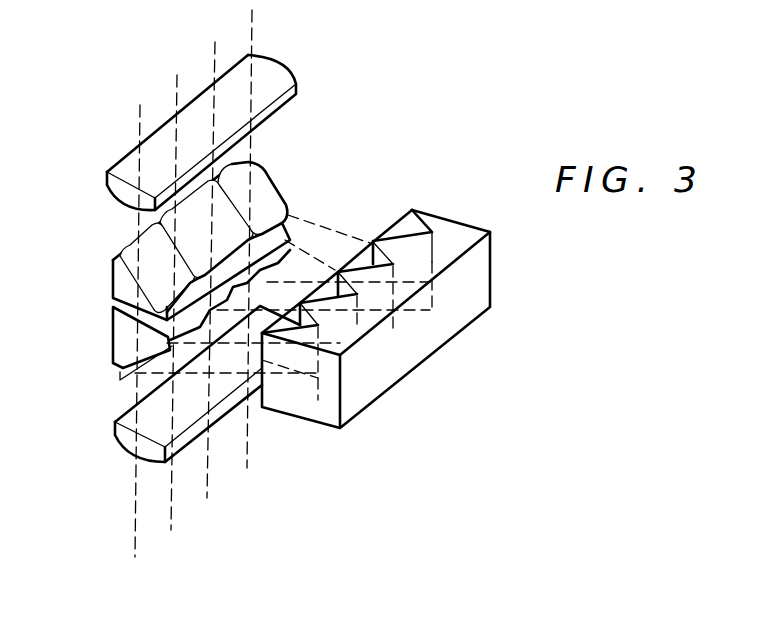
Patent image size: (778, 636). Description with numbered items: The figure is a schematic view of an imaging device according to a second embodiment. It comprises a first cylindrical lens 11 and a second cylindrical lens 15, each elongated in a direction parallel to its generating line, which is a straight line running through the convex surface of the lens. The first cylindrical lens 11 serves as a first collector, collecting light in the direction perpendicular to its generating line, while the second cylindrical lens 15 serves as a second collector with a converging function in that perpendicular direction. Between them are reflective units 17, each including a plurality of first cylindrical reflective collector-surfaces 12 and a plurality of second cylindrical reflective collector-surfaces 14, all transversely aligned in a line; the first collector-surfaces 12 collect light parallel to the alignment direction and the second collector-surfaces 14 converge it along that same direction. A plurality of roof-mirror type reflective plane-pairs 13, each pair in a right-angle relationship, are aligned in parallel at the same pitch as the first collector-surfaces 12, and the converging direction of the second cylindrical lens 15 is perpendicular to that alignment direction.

The first cylindrical lens 11 is at (290, 60).
The first cylindrical reflective collector-surfaces 12 is at (272, 183).
The roof-mirror type reflective plane-pairs 13 is at (389, 237).
The second cylindrical reflective collector-surfaces 14 is at (120, 378).
The second cylindrical lens 15 is at (117, 450).
The reflective units 17 is at (112, 270).